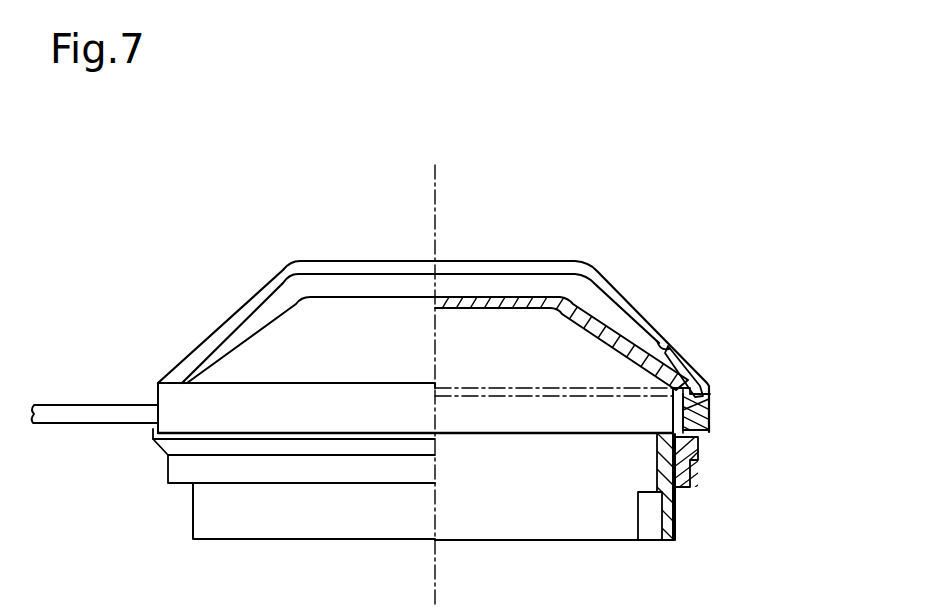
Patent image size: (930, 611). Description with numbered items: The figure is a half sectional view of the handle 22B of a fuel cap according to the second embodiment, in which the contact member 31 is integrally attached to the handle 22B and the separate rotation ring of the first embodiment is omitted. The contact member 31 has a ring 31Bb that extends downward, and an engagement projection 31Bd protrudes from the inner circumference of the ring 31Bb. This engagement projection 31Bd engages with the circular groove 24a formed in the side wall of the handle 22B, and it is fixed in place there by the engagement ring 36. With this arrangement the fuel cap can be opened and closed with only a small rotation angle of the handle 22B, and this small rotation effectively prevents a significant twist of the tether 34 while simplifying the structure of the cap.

The handle 22B is at (562, 217).
The contact member 31 is at (615, 295).
The engagement projection 31Bd is at (712, 406).
The circular groove 24a is at (707, 417).
The ring 31Bb is at (711, 424).
The engagement ring 36 is at (712, 441).
The tether 34 is at (89, 416).